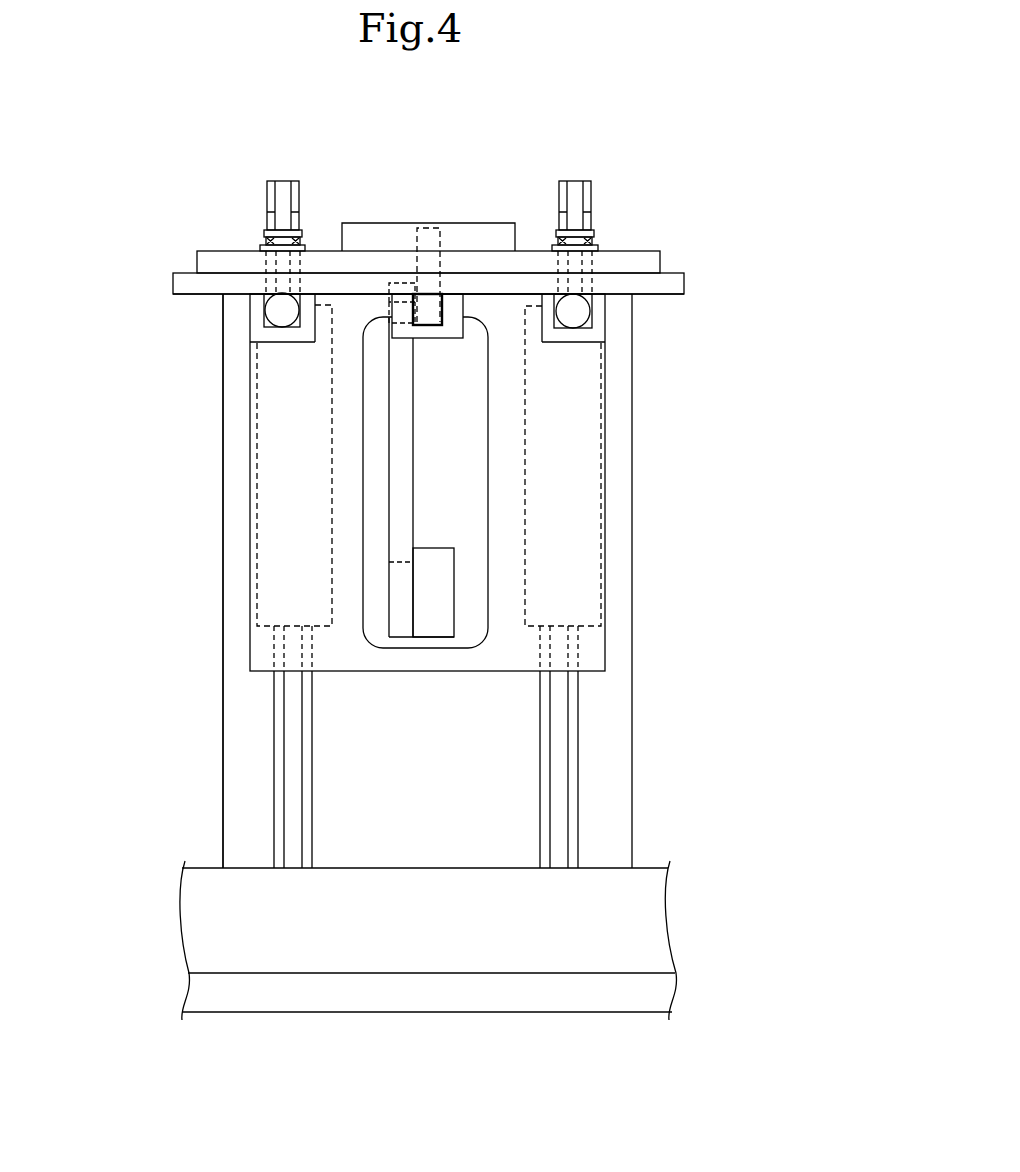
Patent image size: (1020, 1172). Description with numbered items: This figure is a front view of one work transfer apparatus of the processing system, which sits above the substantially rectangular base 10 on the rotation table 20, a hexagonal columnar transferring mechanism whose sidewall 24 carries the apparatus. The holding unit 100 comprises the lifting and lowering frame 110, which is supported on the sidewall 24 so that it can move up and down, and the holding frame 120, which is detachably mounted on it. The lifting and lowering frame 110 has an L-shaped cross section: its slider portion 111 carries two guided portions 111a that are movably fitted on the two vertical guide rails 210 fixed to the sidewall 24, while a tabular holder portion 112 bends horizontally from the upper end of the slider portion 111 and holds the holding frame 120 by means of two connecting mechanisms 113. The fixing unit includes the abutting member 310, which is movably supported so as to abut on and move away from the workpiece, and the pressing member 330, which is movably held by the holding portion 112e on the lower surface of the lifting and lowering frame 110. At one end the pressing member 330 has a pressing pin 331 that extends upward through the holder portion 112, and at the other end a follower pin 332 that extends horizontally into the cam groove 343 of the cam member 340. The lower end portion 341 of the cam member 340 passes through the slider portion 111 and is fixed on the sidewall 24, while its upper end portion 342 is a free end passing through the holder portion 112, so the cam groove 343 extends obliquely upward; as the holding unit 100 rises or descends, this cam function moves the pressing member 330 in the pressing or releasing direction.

The base 10 is at (387, 1012).
The rotation table 20 is at (138, 581).
The sidewall 24 is at (342, 581).
The holding unit 100 is at (488, 247).
The lifting and lowering frame 110 is at (677, 273).
The slider portion 111 is at (443, 663).
The guided portion 111a is at (255, 472).
The holder portion 112 is at (657, 287).
The holding portion 112e is at (451, 328).
The connecting mechanism 113 is at (257, 193).
The holding frame 120 is at (645, 252).
The guide rail 210 is at (313, 783).
The abutting member 310 is at (482, 232).
The pressing member 330 is at (428, 308).
The pressing pin 331 is at (427, 228).
The follower pin 332 is at (390, 312).
The cam member 340 is at (415, 463).
The lower end portion 341 is at (432, 559).
The upper end portion 342 is at (397, 283).
The cam groove 343 is at (399, 562).